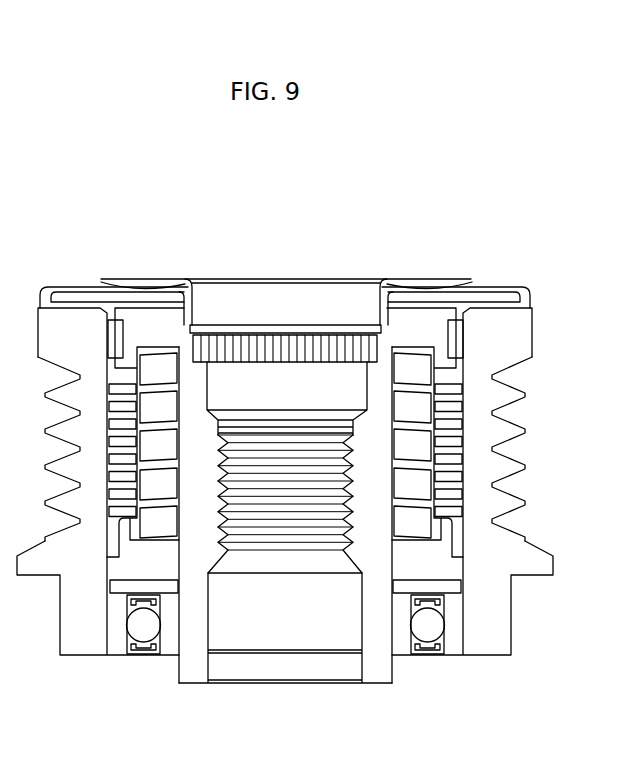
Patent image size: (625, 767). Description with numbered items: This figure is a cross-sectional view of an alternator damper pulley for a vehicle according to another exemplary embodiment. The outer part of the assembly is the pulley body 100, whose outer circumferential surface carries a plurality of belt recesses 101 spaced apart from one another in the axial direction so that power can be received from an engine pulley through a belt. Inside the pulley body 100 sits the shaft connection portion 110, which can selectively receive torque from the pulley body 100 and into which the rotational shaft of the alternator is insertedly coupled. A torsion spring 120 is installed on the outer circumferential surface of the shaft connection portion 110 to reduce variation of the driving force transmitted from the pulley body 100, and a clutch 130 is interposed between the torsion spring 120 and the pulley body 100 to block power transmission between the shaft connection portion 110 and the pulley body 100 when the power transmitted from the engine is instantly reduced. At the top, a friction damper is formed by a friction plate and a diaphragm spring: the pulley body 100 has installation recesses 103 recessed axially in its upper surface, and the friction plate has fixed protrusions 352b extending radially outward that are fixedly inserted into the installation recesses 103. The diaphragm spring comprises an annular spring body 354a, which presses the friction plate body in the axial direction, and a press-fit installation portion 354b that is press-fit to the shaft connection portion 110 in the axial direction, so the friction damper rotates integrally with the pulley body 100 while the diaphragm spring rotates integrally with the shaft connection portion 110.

The pulley body 100 is at (504, 622).
The belt recesses 101 is at (529, 413).
The installation recesses 103 is at (529, 299).
The shaft connection portion 110 is at (192, 677).
The torsion spring 120 is at (397, 527).
The clutch 130 is at (455, 473).
The fixed protrusions 352b is at (495, 298).
The annular spring body 354a is at (433, 282).
The press-fit installation portion 354b is at (367, 310).